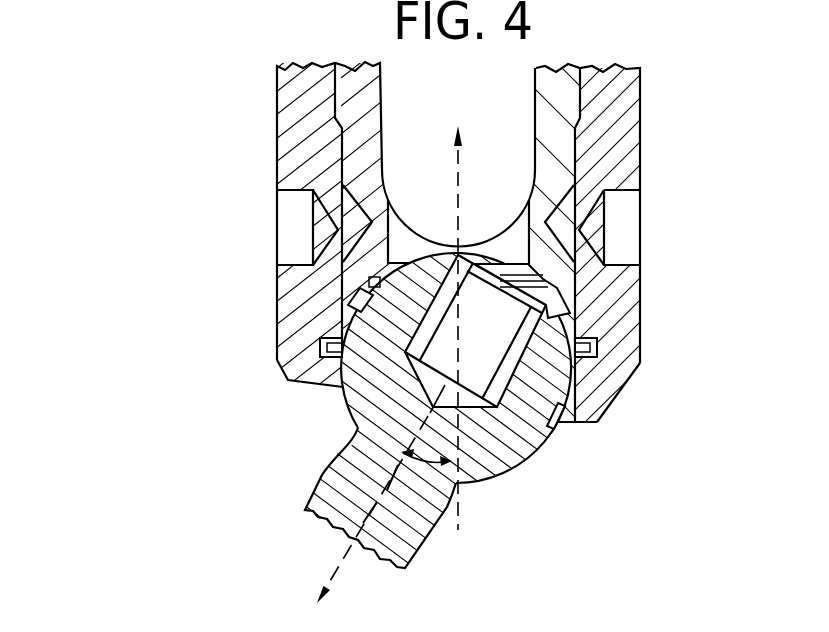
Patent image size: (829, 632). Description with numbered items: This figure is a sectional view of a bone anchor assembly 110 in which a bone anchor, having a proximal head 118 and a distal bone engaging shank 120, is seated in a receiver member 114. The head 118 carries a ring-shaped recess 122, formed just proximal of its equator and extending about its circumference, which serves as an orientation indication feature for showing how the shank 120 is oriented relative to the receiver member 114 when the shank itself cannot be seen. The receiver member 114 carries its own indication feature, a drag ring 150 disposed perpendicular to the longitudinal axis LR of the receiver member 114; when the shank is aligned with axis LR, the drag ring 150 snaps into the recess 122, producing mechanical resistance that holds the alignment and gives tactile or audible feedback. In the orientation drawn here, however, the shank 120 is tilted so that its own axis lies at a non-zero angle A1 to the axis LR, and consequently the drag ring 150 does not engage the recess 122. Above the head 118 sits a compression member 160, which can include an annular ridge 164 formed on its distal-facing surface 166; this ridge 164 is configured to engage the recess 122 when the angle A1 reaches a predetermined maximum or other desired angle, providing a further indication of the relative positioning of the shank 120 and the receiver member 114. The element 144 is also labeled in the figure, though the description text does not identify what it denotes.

The bone anchor assembly 110 is at (190, 171).
The receiver member 114 is at (620, 167).
The proximal head 118 is at (497, 462).
The distal, bone engaging shank 120 is at (408, 555).
The ring-shaped recess 122 is at (347, 300).
The nut 144 is at (600, 280).
The drag ring 150 is at (636, 368).
The compression member 160 is at (355, 78).
The annular ridge 164 is at (377, 268).
The distal-facing surface 166 is at (553, 300).
The angle A1 is at (384, 494).
The longitudinal axis of the receiver member LR is at (456, 310).